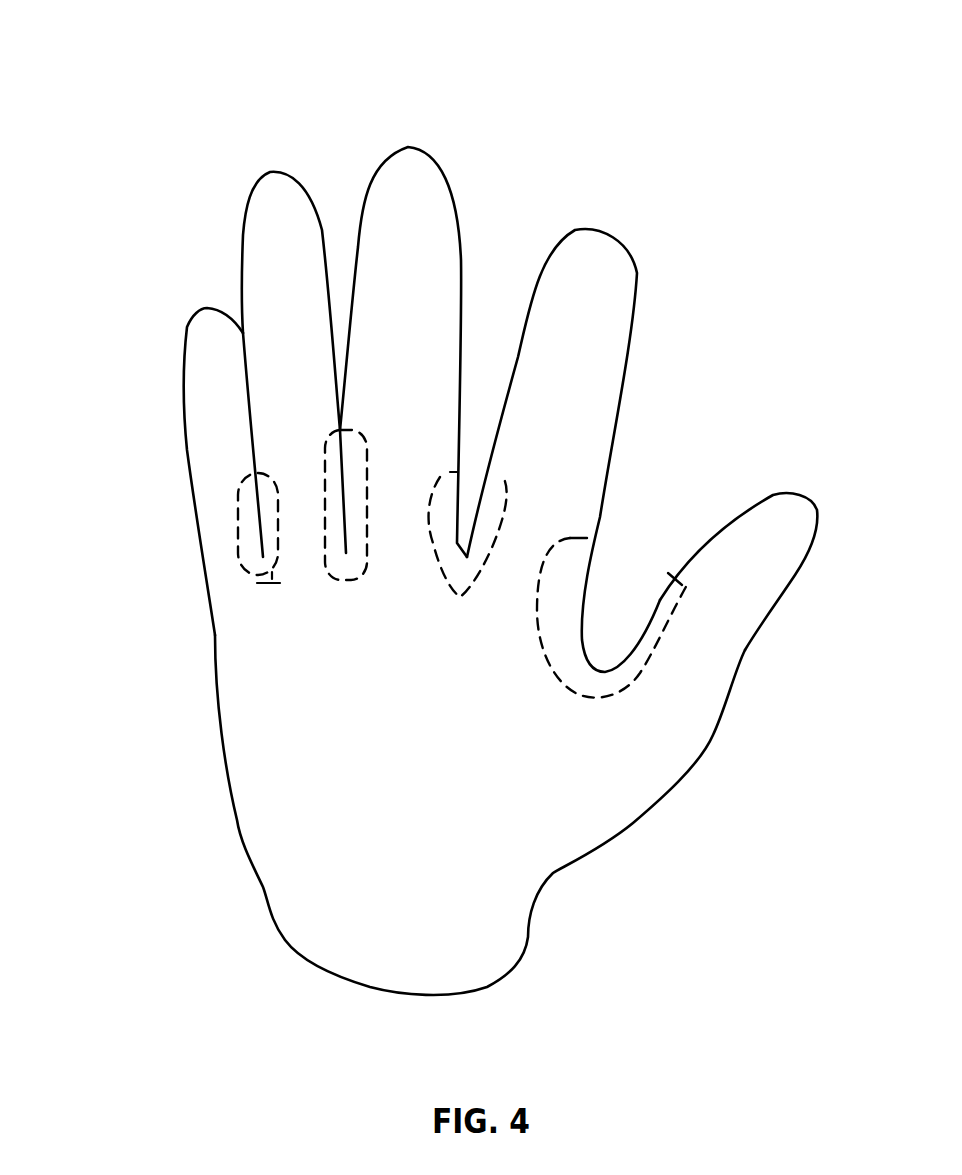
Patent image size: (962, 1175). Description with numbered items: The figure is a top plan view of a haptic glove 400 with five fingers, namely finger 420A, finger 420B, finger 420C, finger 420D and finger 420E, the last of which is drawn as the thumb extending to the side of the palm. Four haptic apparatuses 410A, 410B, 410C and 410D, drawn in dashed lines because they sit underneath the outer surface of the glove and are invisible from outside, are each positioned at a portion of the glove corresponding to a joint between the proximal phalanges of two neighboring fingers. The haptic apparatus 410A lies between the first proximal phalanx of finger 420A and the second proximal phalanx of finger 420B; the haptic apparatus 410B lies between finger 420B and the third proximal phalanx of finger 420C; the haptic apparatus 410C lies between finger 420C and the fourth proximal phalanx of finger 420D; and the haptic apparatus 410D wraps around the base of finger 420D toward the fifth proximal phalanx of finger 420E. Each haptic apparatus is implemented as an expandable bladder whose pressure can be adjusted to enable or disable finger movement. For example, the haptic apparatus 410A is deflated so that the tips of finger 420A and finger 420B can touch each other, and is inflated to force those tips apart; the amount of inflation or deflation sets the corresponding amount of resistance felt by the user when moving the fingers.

The haptic glove 400 is at (427, 502).
The finger 420A is at (180, 412).
The finger 420B is at (238, 240).
The finger 420C is at (378, 156).
The finger 420D is at (575, 224).
The finger 420E is at (765, 496).
The haptic apparatus 410A is at (276, 599).
The haptic apparatus 410B is at (357, 579).
The haptic apparatus 410C is at (447, 592).
The haptic apparatus 410D is at (556, 684).